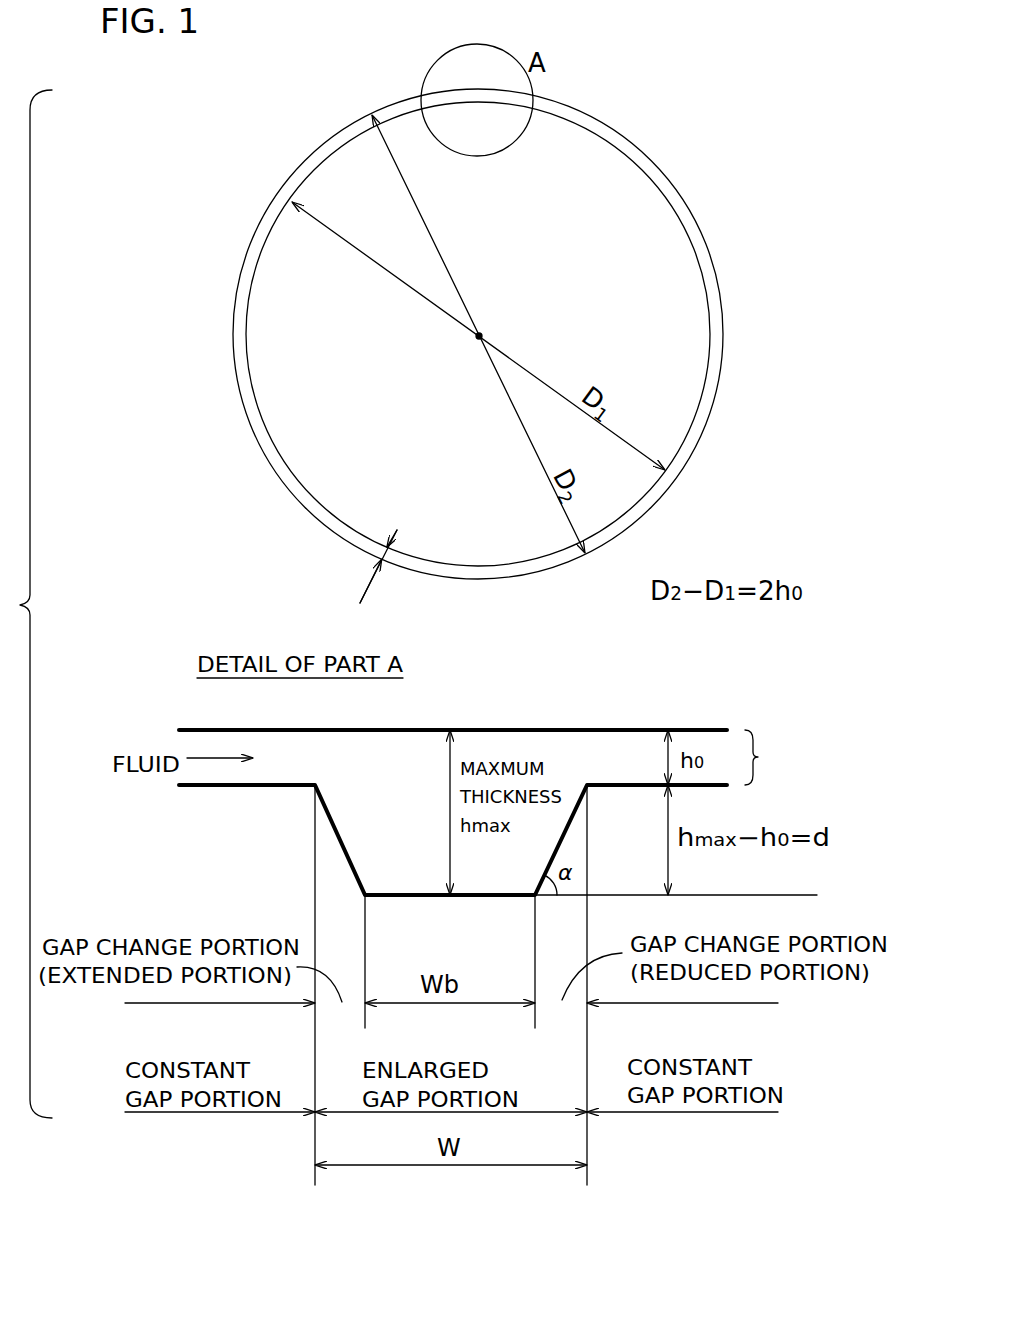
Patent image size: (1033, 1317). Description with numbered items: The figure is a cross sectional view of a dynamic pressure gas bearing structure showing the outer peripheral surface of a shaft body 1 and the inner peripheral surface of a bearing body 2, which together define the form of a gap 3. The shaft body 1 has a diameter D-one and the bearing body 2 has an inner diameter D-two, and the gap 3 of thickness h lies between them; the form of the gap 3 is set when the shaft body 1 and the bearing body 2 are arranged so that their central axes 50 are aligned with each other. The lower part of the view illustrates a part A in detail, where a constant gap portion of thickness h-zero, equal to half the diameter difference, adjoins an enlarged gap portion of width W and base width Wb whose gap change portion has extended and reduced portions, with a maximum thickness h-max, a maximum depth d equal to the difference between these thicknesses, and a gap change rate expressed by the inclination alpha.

The shaft body 1 is at (655, 182).
The bearing body 2 is at (640, 150).
The gap 3 is at (710, 271).
The central axes 50 is at (480, 336).